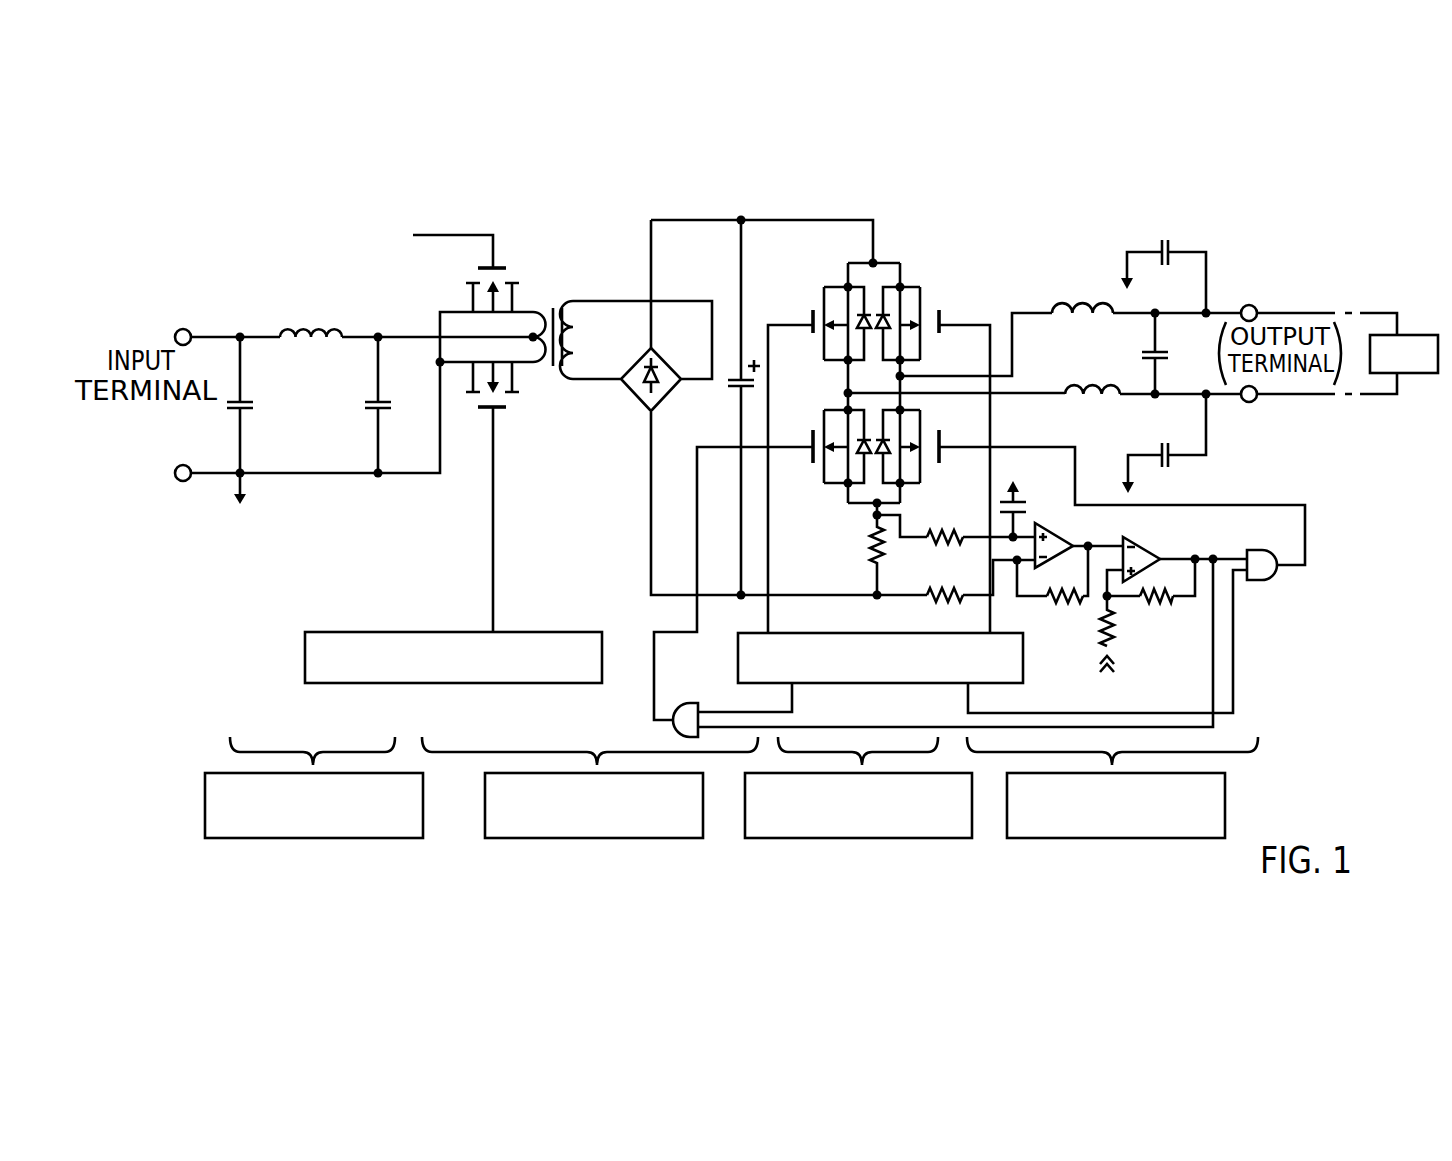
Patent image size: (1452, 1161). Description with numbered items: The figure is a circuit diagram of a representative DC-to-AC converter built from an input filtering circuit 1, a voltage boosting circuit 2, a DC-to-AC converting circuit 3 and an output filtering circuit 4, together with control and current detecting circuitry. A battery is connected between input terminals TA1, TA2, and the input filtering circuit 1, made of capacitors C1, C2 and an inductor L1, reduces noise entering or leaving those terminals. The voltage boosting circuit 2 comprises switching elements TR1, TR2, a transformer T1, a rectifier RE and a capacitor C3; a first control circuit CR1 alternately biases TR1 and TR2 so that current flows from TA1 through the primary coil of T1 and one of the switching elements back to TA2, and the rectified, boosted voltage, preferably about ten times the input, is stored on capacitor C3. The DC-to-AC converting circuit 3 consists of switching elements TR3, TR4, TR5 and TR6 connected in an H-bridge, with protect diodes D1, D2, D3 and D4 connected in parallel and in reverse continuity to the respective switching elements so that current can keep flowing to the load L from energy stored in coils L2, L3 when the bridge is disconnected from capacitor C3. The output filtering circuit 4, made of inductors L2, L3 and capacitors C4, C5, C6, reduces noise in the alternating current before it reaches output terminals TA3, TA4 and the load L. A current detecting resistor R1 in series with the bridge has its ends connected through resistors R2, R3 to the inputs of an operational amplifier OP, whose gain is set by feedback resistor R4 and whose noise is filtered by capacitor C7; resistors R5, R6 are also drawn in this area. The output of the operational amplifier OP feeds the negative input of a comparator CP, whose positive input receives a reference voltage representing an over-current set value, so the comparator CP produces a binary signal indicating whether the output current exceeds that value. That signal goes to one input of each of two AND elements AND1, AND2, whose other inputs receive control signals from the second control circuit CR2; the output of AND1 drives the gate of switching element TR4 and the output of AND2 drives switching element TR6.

The input terminal TA1 is at (185, 317).
The input terminal TA2 is at (188, 498).
The output terminal TA3 is at (1247, 294).
The output terminal TA4 is at (1248, 419).
The inductor L1 is at (311, 313).
The inductor L2 is at (1082, 288).
The inductor L3 is at (1092, 415).
The capacitor C1 is at (258, 405).
The capacitor C2 is at (363, 405).
The capacitor C3 is at (731, 398).
The capacitor C4 is at (1176, 353).
The capacitor C5 is at (1163, 261).
The capacitor C6 is at (1166, 449).
The capacitor C7 is at (1027, 509).
The switching element TR1 is at (471, 277).
The switching element TR2 is at (513, 406).
The switching element TR3 is at (821, 298).
The switching element TR4 is at (927, 468).
The switching element TR5 is at (925, 298).
The switching element TR6 is at (822, 471).
The transformer T1 is at (553, 320).
The rectifier RE is at (642, 356).
The diode D1 is at (850, 323).
The diode D2 is at (898, 446).
The diode D3 is at (900, 323).
The diode D4 is at (849, 446).
The current detecting resistor R1 is at (862, 555).
The resistor R2 is at (947, 556).
The resistor R3 is at (947, 612).
The resistor R4 is at (1064, 616).
The resistor R5 is at (1156, 614).
The resistor R6 is at (1107, 652).
The operational amplifier OP is at (1062, 539).
The comparator CP is at (1152, 554).
The first two-input AND element AND1 is at (1281, 584).
The second two-input AND element AND2 is at (697, 707).
The first control circuit CR1 is at (453, 679).
The second control circuit CR2 is at (880, 680).
The load L is at (1411, 354).
The input filtering circuit 1 is at (314, 787).
The voltage boosting circuit 2 is at (590, 787).
The DC-to-AC converting circuit 3 is at (858, 787).
The output filtering circuit 4 is at (1112, 787).